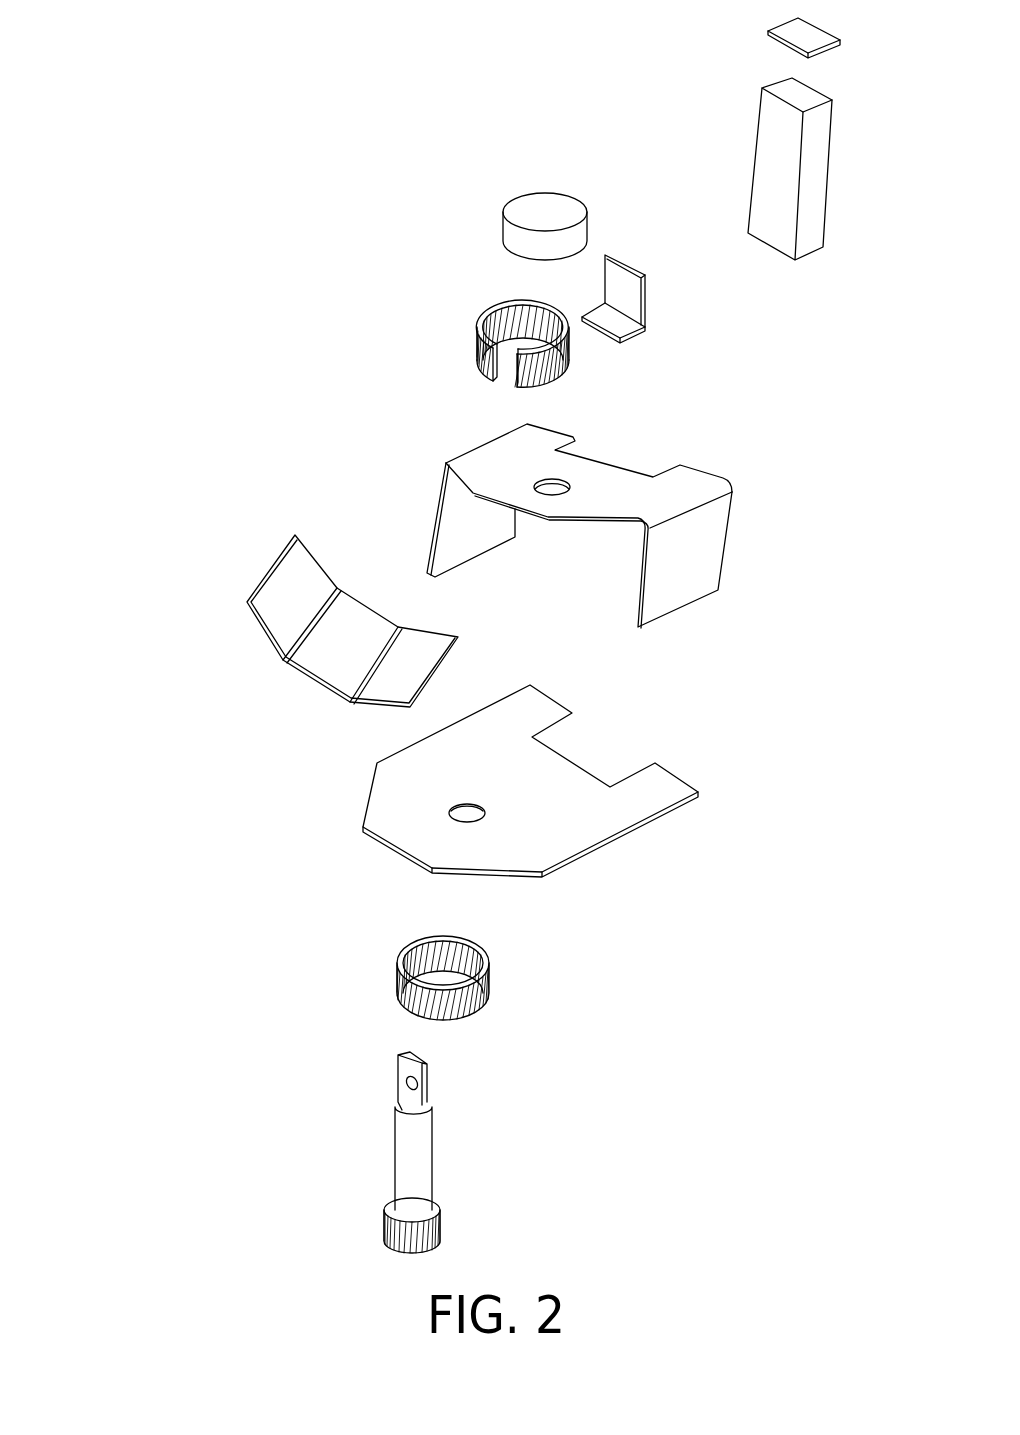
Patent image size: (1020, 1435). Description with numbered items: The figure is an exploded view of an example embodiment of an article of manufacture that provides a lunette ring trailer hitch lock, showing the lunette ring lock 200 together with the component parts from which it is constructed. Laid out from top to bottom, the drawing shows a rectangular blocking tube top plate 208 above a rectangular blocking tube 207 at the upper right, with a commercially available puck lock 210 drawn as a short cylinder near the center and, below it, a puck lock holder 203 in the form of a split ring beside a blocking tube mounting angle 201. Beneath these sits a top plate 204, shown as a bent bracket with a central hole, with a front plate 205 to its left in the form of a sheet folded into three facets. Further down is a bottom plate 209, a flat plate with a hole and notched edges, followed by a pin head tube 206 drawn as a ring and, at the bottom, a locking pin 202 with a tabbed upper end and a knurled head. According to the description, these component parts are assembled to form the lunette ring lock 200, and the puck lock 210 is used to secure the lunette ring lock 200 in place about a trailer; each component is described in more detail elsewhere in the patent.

The lunette ring lock 200 is at (224, 48).
The blocking tube mounting angle 201 is at (633, 327).
The locking pin 202 is at (420, 1157).
The puck lock holder 203 is at (483, 316).
The top plate 204 is at (703, 557).
The front plate 205 is at (267, 563).
The pin head tube 206 is at (492, 977).
The rectangular blocking tube 207 is at (773, 117).
The rectangular blocking tube top plate 208 is at (787, 21).
The bottom plate 209 is at (618, 815).
The puck lock 210 is at (533, 205).